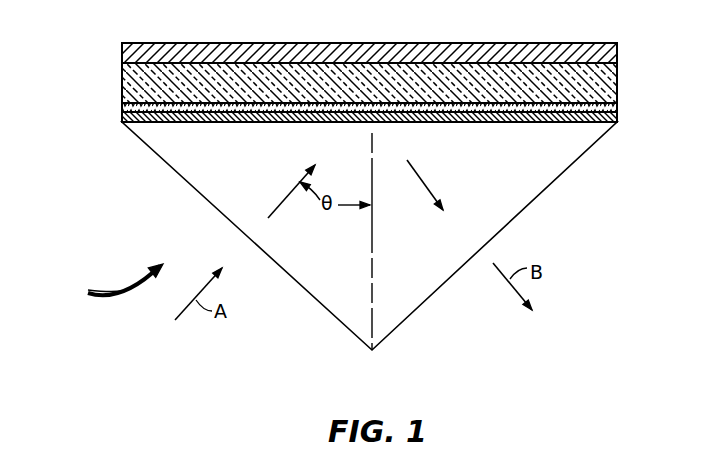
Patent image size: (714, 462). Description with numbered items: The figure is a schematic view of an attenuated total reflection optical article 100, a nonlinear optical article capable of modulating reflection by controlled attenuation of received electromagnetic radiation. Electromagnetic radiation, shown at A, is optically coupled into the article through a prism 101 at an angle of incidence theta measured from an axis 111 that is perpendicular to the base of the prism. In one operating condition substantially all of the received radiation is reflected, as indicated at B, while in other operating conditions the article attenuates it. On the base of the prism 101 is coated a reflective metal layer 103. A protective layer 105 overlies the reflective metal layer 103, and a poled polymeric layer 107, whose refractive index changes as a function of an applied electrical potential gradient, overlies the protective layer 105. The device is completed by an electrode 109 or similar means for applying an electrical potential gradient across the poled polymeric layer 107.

The attenuated total reflection optical article 100 is at (70, 300).
The prism 101 is at (517, 212).
The reflective metal layer 103 is at (617, 119).
The protective layer 105 is at (122, 107).
The poled polymeric layer 107 is at (617, 84).
The electrode 109 is at (445, 47).
The axis 111 is at (372, 245).